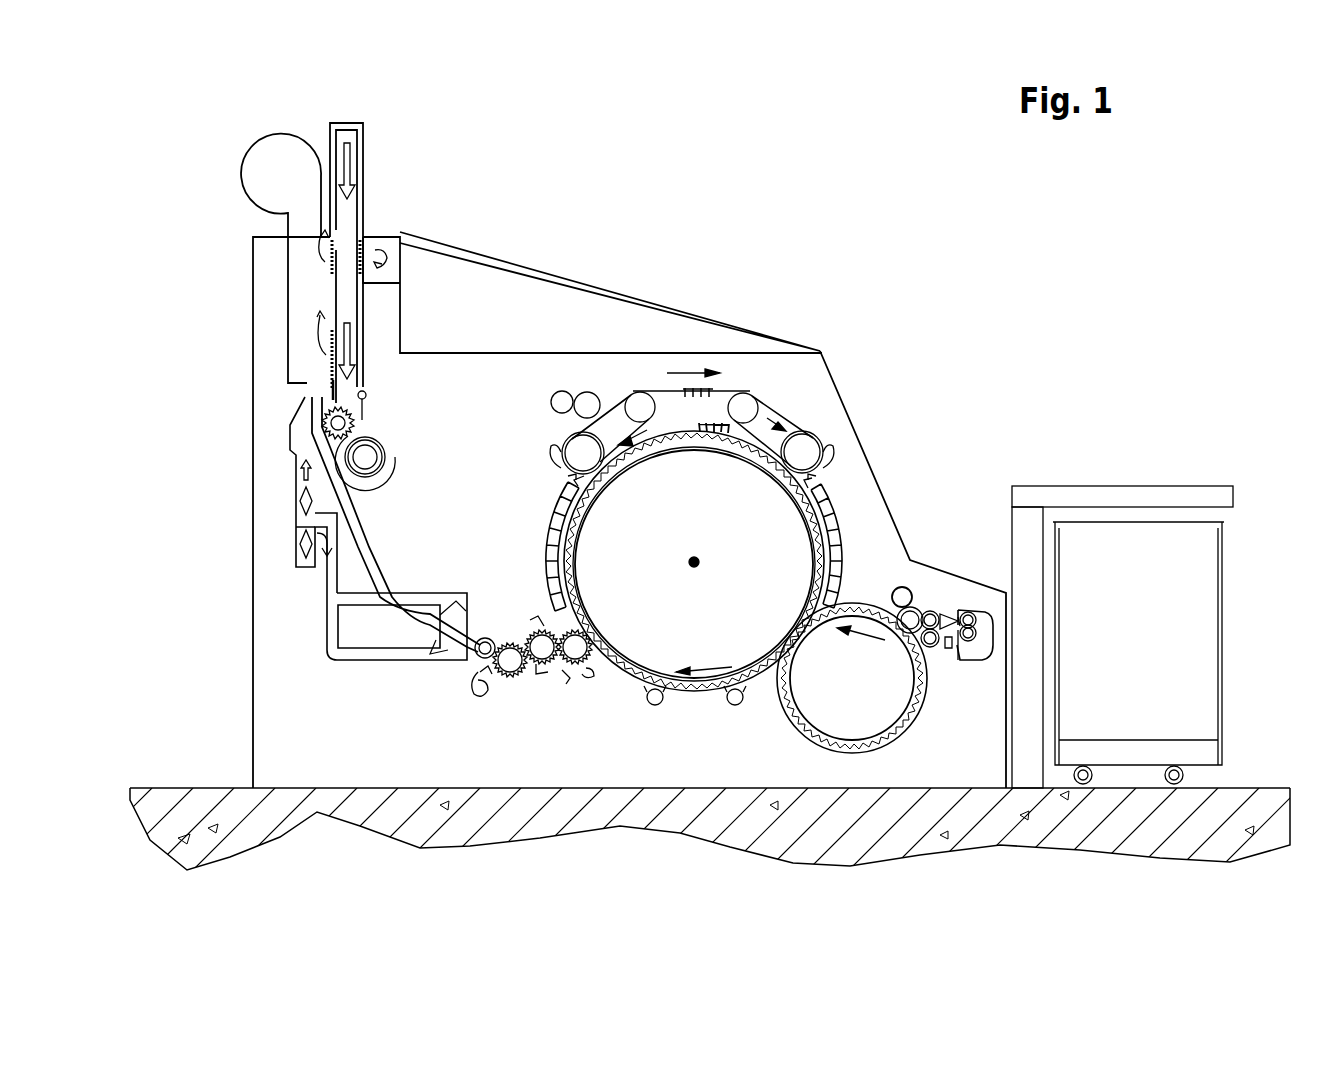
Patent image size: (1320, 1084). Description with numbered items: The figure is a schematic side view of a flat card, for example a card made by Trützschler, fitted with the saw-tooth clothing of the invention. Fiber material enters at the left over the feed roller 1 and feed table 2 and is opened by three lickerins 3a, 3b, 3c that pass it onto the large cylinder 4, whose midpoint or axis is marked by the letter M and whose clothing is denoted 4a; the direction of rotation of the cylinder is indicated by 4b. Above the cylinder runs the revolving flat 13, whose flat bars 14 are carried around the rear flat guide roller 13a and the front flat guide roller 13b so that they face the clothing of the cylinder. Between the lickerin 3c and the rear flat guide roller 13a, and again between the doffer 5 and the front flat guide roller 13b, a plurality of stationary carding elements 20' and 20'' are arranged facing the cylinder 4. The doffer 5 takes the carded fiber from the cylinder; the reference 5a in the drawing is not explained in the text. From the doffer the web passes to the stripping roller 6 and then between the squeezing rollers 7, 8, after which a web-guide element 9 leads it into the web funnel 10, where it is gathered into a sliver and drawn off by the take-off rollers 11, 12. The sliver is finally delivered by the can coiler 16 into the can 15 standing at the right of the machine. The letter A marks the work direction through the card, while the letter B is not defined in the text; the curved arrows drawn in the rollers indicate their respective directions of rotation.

The feed roller 1 is at (490, 665).
The feed table 2 is at (492, 640).
The lickerin 3a is at (510, 668).
The lickerin 3b is at (538, 645).
The lickerin 3c is at (575, 655).
The cylinder 4 is at (694, 664).
The clothing 4a is at (684, 688).
The direction of rotation of the cylinder 4b is at (710, 672).
The doffer 5 is at (852, 771).
The drum toothing 5a is at (862, 745).
The stripping roller 6 is at (918, 618).
The squeezing roller 7 is at (931, 615).
The squeezing roller 8 is at (945, 642).
The web-guide element 9 is at (948, 650).
The web funnel 10 is at (958, 615).
The take-off roller 11 is at (970, 625).
The take-off roller 12 is at (975, 660).
The revolving flat 13 is at (674, 337).
The rear flat guide roller 13a is at (582, 450).
The front flat guide roller 13b is at (801, 452).
The flat bars 14 is at (703, 425).
The can 15 is at (1140, 717).
The can coiler 16 is at (1168, 495).
The stationary carding elements 20' is at (542, 543).
The stationary carding elements 20'' is at (866, 447).
The midpoint (axis) of the cylinder M is at (694, 564).
The work direction A is at (688, 370).
The belt running direction B is at (567, 441).